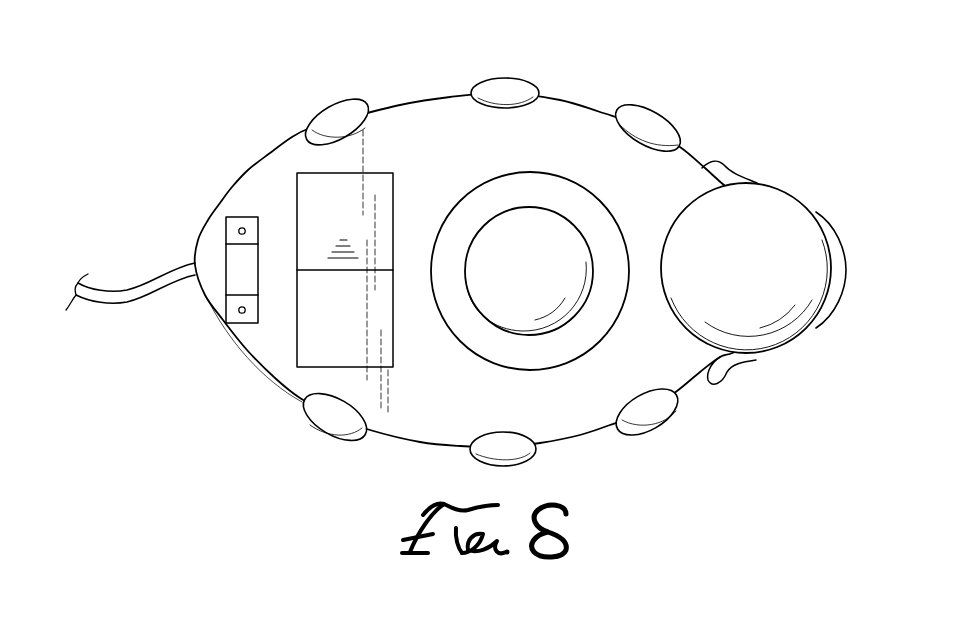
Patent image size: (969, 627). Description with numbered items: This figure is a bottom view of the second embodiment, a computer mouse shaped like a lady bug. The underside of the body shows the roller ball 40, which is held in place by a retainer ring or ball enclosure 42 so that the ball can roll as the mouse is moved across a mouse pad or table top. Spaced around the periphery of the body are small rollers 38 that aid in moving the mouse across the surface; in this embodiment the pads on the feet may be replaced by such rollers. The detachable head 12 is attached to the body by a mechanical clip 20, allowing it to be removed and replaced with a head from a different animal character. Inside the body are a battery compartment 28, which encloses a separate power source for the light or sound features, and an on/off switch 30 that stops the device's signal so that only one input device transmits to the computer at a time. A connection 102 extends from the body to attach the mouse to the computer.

The head 12 is at (762, 233).
The mechanical clip 20 is at (727, 372).
The battery compartment 28 is at (310, 204).
The on/off switch 30 is at (232, 279).
The small rollers 38 is at (344, 118).
The roller ball 40 is at (534, 238).
The retainer ring or ball enclosure 42 is at (585, 332).
The connection 102 is at (127, 302).